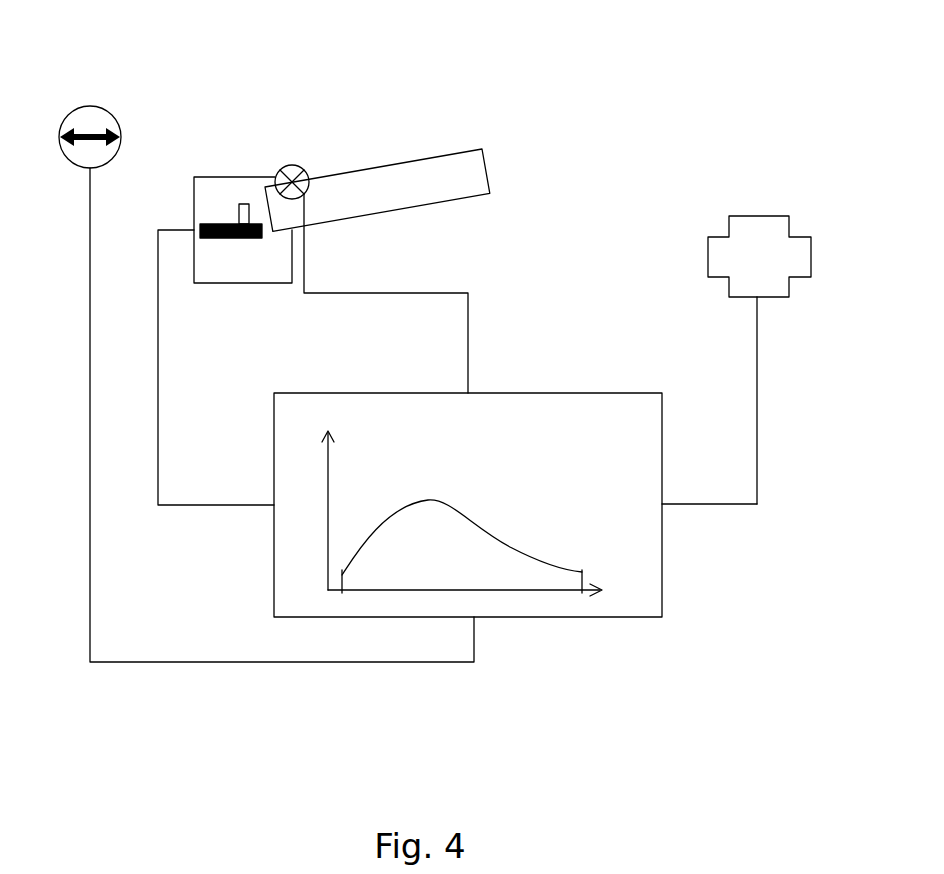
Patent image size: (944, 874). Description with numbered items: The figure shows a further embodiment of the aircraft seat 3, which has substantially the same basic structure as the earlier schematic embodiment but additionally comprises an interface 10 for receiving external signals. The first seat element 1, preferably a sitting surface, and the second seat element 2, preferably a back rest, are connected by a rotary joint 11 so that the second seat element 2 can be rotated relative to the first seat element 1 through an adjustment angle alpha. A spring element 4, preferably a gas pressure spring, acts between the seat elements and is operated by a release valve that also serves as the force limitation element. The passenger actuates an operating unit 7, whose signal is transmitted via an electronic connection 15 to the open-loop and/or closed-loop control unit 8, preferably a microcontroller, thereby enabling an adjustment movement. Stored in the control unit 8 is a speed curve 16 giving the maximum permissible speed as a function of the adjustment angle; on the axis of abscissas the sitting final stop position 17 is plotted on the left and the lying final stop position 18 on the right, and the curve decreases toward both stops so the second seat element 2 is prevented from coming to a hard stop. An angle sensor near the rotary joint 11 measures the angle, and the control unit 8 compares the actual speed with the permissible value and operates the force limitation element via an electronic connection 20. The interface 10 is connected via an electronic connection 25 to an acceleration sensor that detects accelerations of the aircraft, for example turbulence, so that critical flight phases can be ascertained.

The first seat element 1 is at (203, 207).
The second seat element 2 is at (445, 165).
The aircraft seat 3 is at (271, 84).
The spring element 4 is at (243, 240).
The operating unit 7 is at (90, 121).
The open-loop and/or closed-loop control unit 8 is at (541, 403).
The interface 10 is at (668, 492).
The rotary joint 11 is at (303, 166).
The electronic connection 15 is at (195, 663).
The speed curve 16 is at (460, 512).
The sitting final stop position 17 is at (342, 610).
The lying final stop position 18 is at (584, 610).
The electronic connection 20 is at (232, 503).
The electronic connection 25 is at (757, 386).